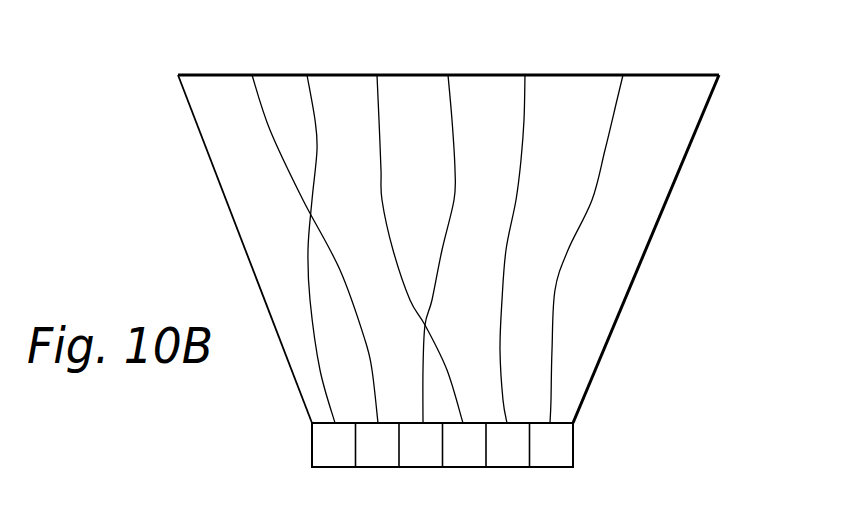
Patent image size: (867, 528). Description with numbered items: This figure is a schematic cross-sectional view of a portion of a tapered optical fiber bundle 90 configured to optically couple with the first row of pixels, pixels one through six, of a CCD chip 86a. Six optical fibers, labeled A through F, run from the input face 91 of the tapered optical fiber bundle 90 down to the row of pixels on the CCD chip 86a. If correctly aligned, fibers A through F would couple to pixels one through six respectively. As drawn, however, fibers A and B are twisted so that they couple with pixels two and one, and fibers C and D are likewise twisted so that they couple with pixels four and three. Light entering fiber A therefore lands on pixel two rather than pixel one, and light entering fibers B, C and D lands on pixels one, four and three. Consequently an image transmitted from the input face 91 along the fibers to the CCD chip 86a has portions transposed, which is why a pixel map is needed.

The tapered optical fiber bundle 90 is at (679, 172).
The input face 91 is at (692, 76).
The CCD chip 86a is at (573, 440).